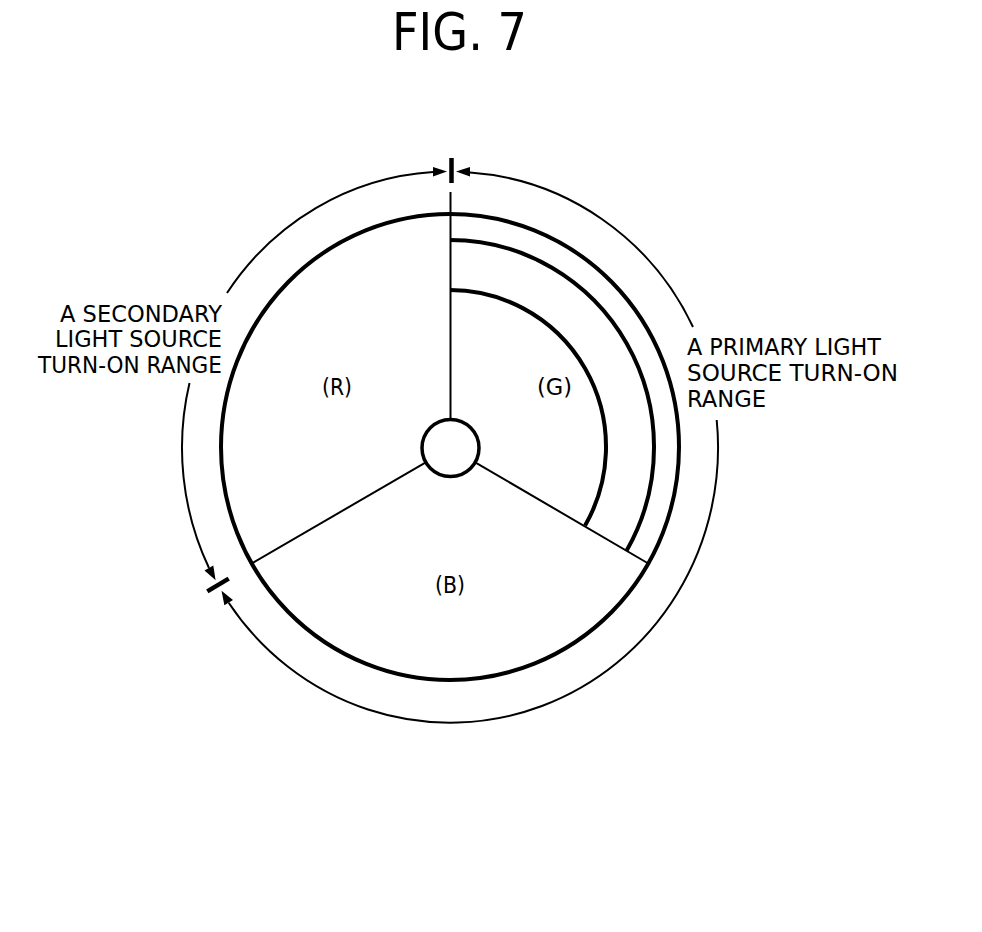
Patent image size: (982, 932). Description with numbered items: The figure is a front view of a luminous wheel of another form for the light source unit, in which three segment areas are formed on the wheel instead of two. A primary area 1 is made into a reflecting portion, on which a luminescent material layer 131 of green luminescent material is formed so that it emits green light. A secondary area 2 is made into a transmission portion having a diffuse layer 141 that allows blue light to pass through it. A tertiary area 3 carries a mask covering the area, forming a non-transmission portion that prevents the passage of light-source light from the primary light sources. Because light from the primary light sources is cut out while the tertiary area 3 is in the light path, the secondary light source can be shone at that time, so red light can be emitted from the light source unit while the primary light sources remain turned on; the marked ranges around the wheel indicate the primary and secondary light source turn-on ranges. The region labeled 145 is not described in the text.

The primary area 1 is at (556, 255).
The secondary area 2 is at (497, 637).
The tertiary area 3 is at (350, 273).
The luminescent material layer 131 is at (625, 430).
The diffuse layer 141 is at (405, 612).
The segment boundary (R) 145 is at (288, 449).